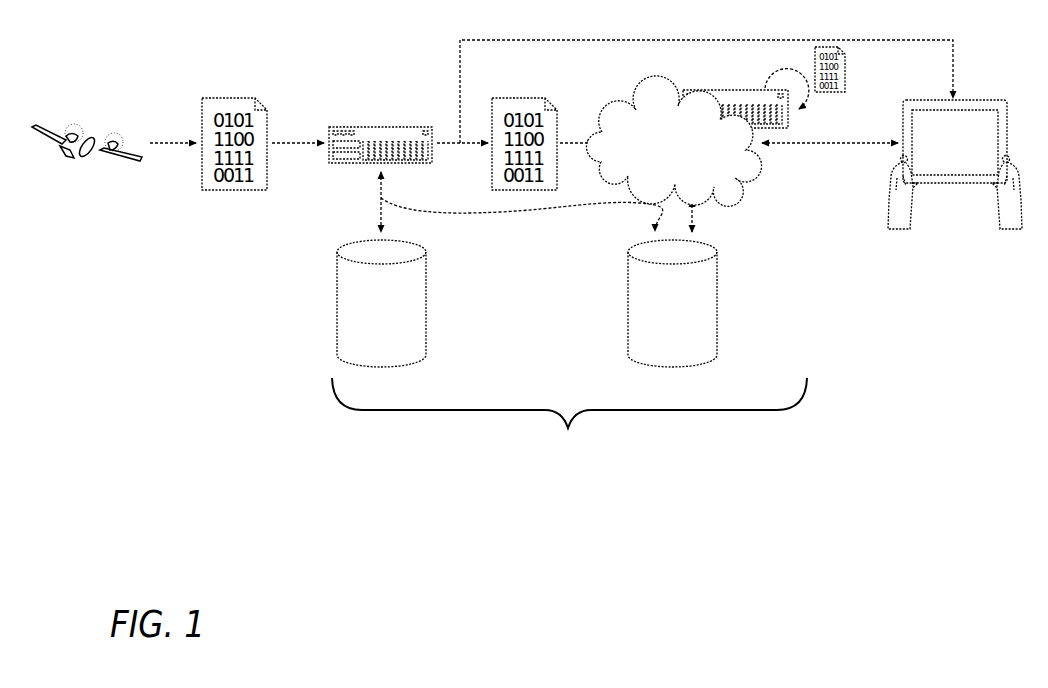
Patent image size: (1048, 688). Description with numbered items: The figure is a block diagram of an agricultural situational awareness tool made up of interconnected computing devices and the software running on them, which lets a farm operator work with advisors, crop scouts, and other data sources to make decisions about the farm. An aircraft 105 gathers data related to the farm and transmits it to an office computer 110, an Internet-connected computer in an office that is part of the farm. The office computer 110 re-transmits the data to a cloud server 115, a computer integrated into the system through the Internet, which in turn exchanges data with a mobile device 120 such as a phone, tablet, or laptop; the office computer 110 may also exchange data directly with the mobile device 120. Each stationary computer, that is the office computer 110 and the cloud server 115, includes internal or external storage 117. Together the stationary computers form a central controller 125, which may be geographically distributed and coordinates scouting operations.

The aircraft 105 is at (88, 118).
The office computer 110 is at (390, 126).
The cloud server 115 is at (738, 90).
The storage 117 is at (426, 304).
The mobile device 120 is at (965, 98).
The central controller 125 is at (569, 421).